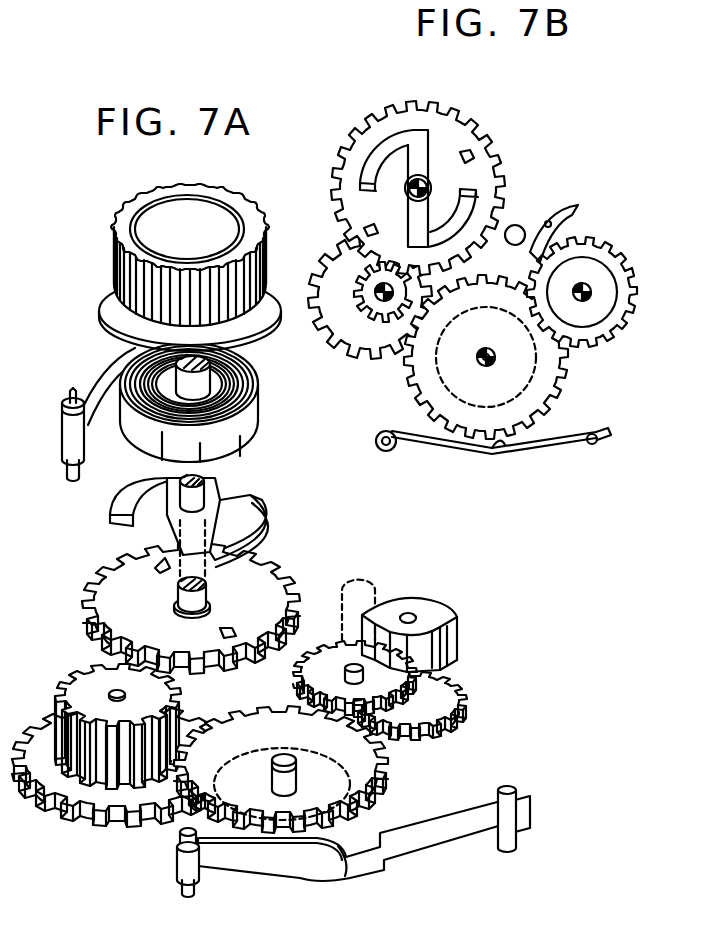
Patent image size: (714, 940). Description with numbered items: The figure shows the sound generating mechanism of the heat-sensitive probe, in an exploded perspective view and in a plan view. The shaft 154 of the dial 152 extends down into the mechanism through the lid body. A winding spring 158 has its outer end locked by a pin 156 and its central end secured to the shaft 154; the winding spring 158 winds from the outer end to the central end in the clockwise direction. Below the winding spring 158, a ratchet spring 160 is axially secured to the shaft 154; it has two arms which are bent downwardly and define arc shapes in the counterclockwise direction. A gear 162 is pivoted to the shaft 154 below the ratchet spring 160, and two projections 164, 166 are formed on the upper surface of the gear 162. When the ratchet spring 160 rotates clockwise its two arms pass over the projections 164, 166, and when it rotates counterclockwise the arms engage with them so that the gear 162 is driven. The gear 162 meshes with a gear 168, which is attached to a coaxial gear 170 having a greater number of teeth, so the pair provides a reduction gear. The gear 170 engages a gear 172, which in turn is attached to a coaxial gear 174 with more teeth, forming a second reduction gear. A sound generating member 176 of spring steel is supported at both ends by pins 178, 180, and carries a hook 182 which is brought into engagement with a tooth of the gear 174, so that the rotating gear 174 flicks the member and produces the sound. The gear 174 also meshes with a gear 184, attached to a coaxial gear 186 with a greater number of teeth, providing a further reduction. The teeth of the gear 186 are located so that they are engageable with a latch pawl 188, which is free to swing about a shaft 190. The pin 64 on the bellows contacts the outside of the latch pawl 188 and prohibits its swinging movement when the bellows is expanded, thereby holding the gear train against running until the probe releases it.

In FIG. 7A, the pin 64 is at (358, 590).
In FIG. 7B, the pin 64 is at (510, 243).
In FIG. 7A, the dial 152 is at (228, 200).
In FIG. 7A, the shaft 154 is at (204, 484).
In FIG. 7B, the shaft 154 is at (404, 188).
In FIG. 7A, the pin 156 is at (62, 460).
In FIG. 7A, the winding spring 158 is at (258, 405).
In FIG. 7A, the ratchet spring 160 is at (260, 498).
In FIG. 7B, the ratchet spring 160 is at (370, 163).
In FIG. 7A, the gear 162 is at (100, 578).
In FIG. 7B, the gear 162 is at (472, 122).
In FIG. 7A, the projection 164 is at (226, 632).
In FIG. 7B, the projection 164 is at (472, 152).
In FIG. 7A, the projection 166 is at (157, 562).
In FIG. 7B, the projection 166 is at (365, 230).
In FIG. 7A, the gear 168 is at (73, 683).
In FIG. 7B, the gear 168 is at (368, 313).
In FIG. 7A, the gear 170 is at (95, 800).
In FIG. 7B, the gear 170 is at (368, 360).
In FIG. 7A, the gear 172 is at (268, 754).
In FIG. 7B, the gear 172 is at (432, 396).
In FIG. 7A, the gear 174 is at (378, 790).
In FIG. 7B, the gear 174 is at (550, 380).
In FIG. 7A, the sound generating member 176 is at (364, 847).
In FIG. 7B, the sound generating member 176 is at (495, 457).
In FIG. 7A, the pin 178 is at (195, 882).
In FIG. 7B, the pin 178 is at (388, 452).
In FIG. 7A, the pin 180 is at (510, 848).
In FIG. 7B, the pin 180 is at (593, 447).
In FIG. 7A, the hook 182 is at (333, 872).
In FIG. 7B, the hook 182 is at (500, 450).
In FIG. 7A, the gear 184 is at (430, 680).
In FIG. 7B, the gear 184 is at (590, 262).
In FIG. 7A, the gear 186 is at (452, 712).
In FIG. 7B, the gear 186 is at (612, 325).
In FIG. 7A, the latch pawl 188 is at (434, 622).
In FIG. 7B, the latch pawl 188 is at (559, 220).
In FIG. 7A, the shaft 190 is at (408, 613).
In FIG. 7B, the shaft 190 is at (545, 222).